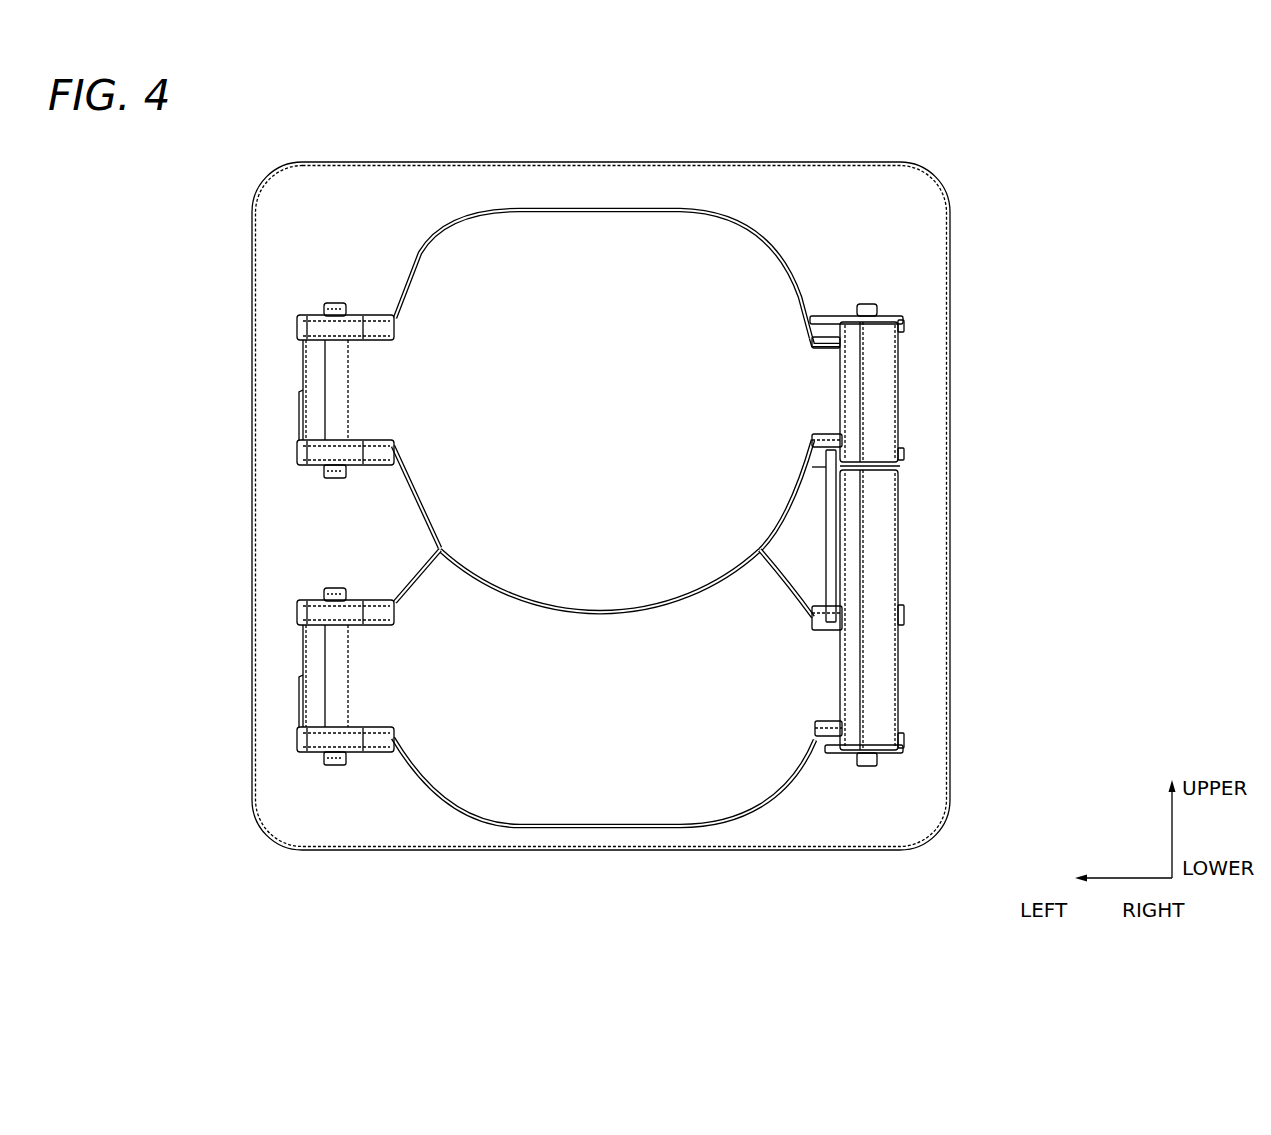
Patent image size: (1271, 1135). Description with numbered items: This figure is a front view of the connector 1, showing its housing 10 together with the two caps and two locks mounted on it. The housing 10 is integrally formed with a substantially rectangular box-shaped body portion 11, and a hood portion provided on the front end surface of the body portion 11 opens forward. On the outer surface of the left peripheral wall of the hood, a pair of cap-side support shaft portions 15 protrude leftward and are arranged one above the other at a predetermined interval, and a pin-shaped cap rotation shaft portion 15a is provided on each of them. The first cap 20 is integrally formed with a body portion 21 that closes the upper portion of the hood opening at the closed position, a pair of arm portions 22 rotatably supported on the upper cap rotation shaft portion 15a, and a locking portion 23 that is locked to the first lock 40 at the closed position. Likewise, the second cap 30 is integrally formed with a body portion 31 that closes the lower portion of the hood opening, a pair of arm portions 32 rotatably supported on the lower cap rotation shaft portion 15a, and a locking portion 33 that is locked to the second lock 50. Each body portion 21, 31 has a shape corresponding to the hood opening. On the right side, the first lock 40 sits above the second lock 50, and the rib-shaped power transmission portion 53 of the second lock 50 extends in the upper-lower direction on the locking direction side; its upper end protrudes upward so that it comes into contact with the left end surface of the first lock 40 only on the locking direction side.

The connector 1 is at (936, 150).
The housing 10 is at (951, 185).
The body portion 11 is at (662, 188).
The cap-side support shaft portion 15 is at (320, 330).
The cap rotation shaft portion 15a is at (333, 478).
The first cap 20 is at (697, 360).
The body portion 21 is at (575, 265).
The arm portion 22 is at (362, 385).
The locking portion 23 is at (838, 363).
The second cap 30 is at (703, 737).
The body portion 31 is at (556, 787).
The arm portion 32 is at (365, 668).
The locking portion 33 is at (827, 703).
The first lock 40 is at (910, 385).
The second lock 50 is at (910, 668).
The power transmission portion 53 is at (838, 535).